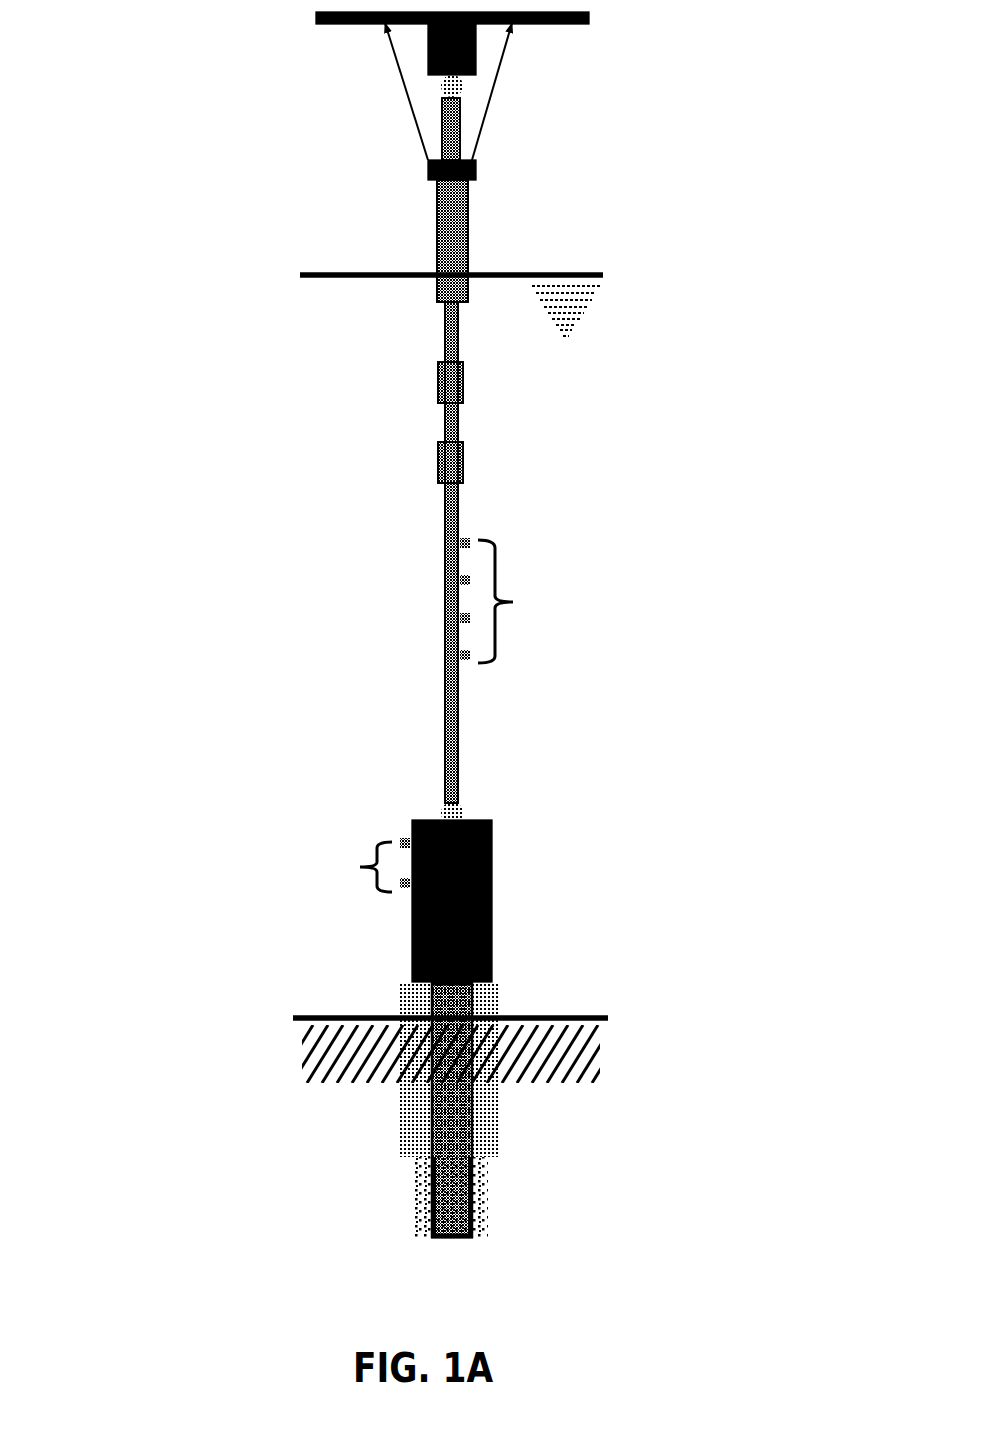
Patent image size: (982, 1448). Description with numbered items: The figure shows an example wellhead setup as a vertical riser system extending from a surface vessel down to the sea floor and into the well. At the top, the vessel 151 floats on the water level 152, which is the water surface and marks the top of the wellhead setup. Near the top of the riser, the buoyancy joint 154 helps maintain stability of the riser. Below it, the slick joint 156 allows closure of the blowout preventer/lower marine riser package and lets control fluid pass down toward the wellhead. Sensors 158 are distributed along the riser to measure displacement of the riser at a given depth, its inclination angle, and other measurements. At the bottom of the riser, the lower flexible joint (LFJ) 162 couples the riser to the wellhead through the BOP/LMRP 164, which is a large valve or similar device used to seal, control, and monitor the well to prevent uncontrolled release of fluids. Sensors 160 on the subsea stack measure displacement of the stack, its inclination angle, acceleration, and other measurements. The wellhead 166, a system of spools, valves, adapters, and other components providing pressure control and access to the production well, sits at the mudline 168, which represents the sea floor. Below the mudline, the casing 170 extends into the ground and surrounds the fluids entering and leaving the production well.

The vessel 151 is at (397, 125).
The water level 152 is at (316, 294).
The buoyancy joint 154 is at (418, 464).
The slick joint 156 is at (433, 582).
The sensors along the riser 158 is at (610, 614).
The sensors on the subsea stack 160 is at (256, 882).
The lower flexible joint (LFJ) 162 is at (502, 812).
The blowout preventer/lower marine riser package (BOP/LMRP) 164 is at (493, 895).
The wellhead 166 is at (616, 1070).
The mudline 168 is at (357, 1036).
The casing 170 is at (510, 1143).